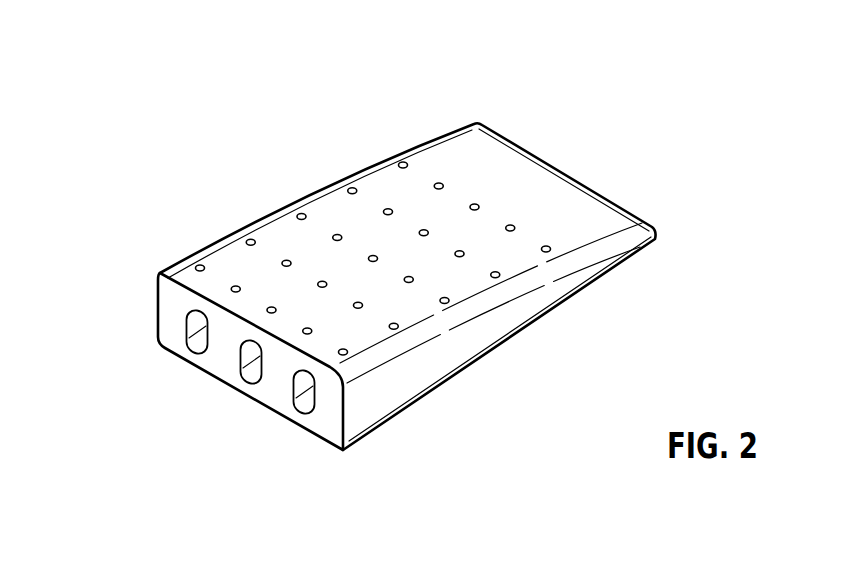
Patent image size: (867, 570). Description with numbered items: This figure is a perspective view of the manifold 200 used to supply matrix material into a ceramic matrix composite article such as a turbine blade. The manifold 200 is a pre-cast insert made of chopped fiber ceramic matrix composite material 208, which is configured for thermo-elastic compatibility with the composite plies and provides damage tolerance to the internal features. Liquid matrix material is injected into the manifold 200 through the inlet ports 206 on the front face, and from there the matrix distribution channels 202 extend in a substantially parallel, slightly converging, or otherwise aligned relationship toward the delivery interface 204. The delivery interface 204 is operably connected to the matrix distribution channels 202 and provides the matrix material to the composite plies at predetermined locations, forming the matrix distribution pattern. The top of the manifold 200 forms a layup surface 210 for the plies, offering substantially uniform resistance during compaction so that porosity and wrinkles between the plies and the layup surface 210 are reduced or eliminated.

The manifold 200 is at (265, 492).
The matrix distribution channels 202 is at (195, 334).
The delivery interface 204 is at (200, 265).
The inlet ports 206 is at (250, 384).
The chopped fiber ceramic matrix composite material 208 is at (540, 304).
The layup surface 210 is at (540, 178).